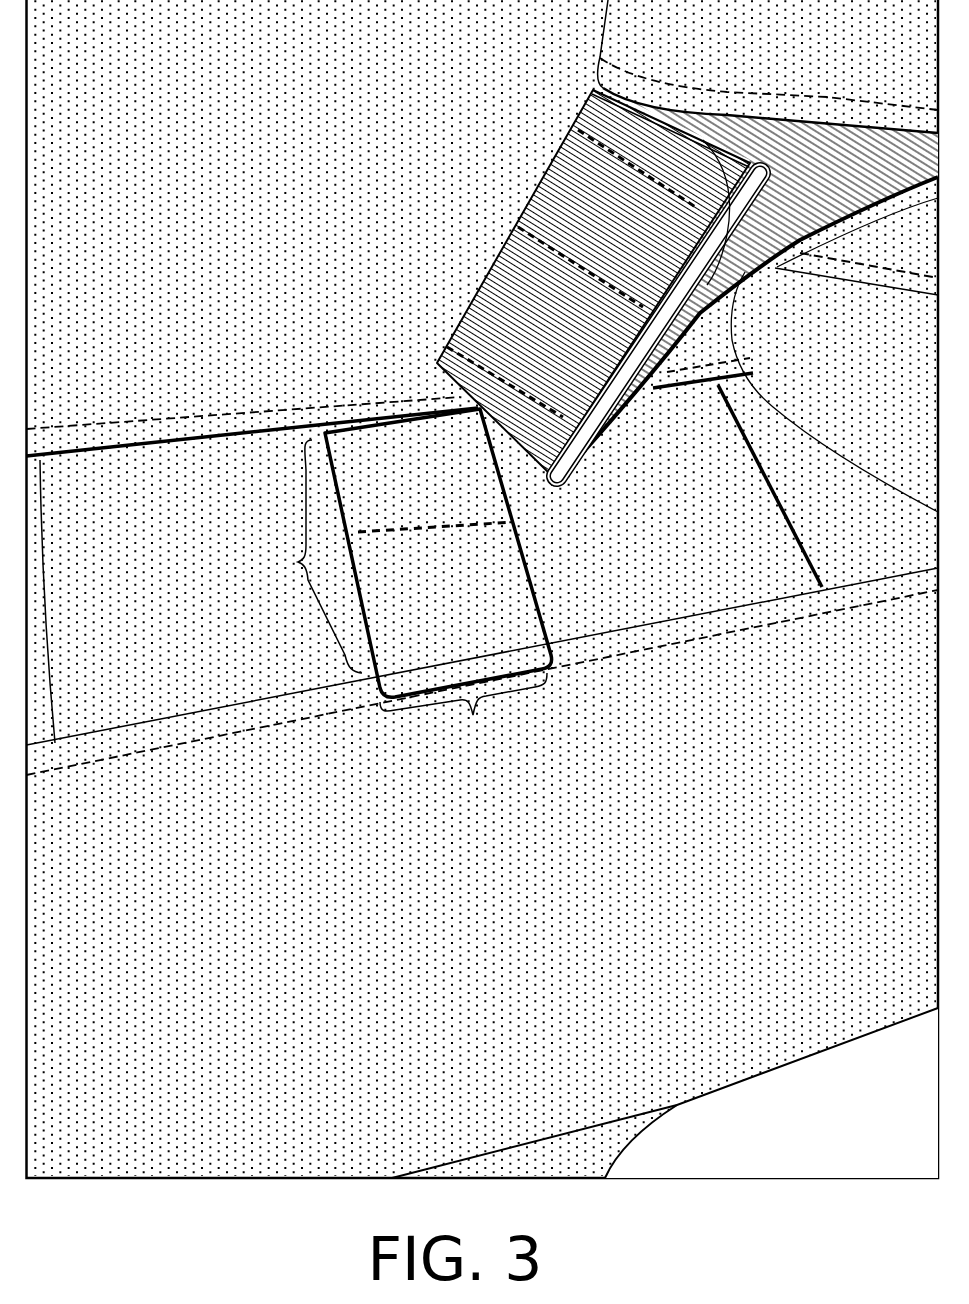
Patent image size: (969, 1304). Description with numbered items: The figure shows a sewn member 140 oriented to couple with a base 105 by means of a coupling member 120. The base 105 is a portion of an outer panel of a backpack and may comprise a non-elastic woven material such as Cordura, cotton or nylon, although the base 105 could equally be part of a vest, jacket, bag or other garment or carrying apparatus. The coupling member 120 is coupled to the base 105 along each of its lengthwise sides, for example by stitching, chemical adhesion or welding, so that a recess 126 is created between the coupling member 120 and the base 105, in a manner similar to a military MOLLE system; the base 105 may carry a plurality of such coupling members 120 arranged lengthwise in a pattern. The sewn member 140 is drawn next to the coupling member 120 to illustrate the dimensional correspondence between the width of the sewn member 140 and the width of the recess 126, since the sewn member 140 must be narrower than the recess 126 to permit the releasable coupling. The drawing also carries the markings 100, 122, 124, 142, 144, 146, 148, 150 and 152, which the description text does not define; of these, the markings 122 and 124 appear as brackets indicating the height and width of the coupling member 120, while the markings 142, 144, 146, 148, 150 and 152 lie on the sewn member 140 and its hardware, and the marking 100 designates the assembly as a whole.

The garment 100 is at (170, 264).
The base 105 is at (252, 876).
The coupling member 120 is at (461, 543).
The patch height dimension 122 is at (305, 556).
The patch width dimension 124 is at (463, 713).
The recess 126 is at (513, 522).
The sewn member 140 is at (743, 412).
The strap stitching 142 is at (892, 272).
The upper strap 144 is at (783, 230).
The buckle tongue 146 is at (748, 280).
The buckle 148 is at (500, 305).
The buckle stitching 150 is at (512, 228).
The buckle end stitching 152 is at (455, 352).